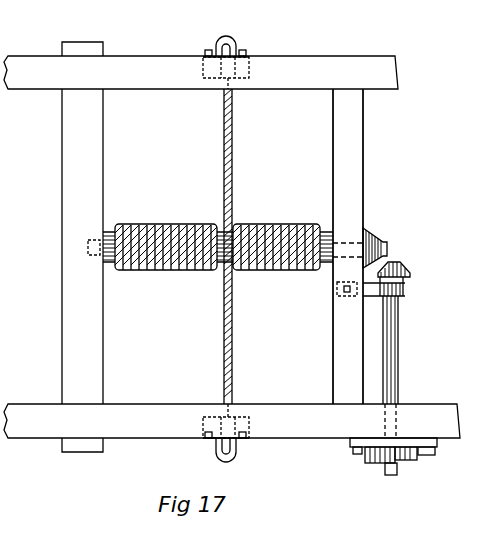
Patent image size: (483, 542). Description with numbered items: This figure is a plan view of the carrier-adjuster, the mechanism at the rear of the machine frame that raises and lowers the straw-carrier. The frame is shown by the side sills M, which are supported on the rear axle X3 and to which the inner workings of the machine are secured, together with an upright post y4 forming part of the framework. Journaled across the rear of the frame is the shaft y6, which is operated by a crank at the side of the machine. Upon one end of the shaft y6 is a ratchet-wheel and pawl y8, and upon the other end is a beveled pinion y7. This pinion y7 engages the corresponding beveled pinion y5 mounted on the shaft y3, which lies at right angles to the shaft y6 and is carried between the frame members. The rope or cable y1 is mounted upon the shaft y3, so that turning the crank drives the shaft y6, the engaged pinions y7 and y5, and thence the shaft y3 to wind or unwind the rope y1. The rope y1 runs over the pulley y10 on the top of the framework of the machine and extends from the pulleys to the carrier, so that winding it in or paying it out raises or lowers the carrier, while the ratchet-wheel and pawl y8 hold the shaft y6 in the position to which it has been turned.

The side sill M is at (274, 67).
The rear axle X3 is at (93, 163).
The right upright post y4 is at (353, 168).
The shaft y3 is at (353, 250).
The rope or cable y1 is at (233, 147).
The pulley y10 is at (225, 37).
The beveled pinion y5 is at (380, 237).
The beveled pinion y7 is at (405, 268).
The shaft y6 is at (402, 322).
The ratchet-wheel and pawl y8 is at (383, 466).